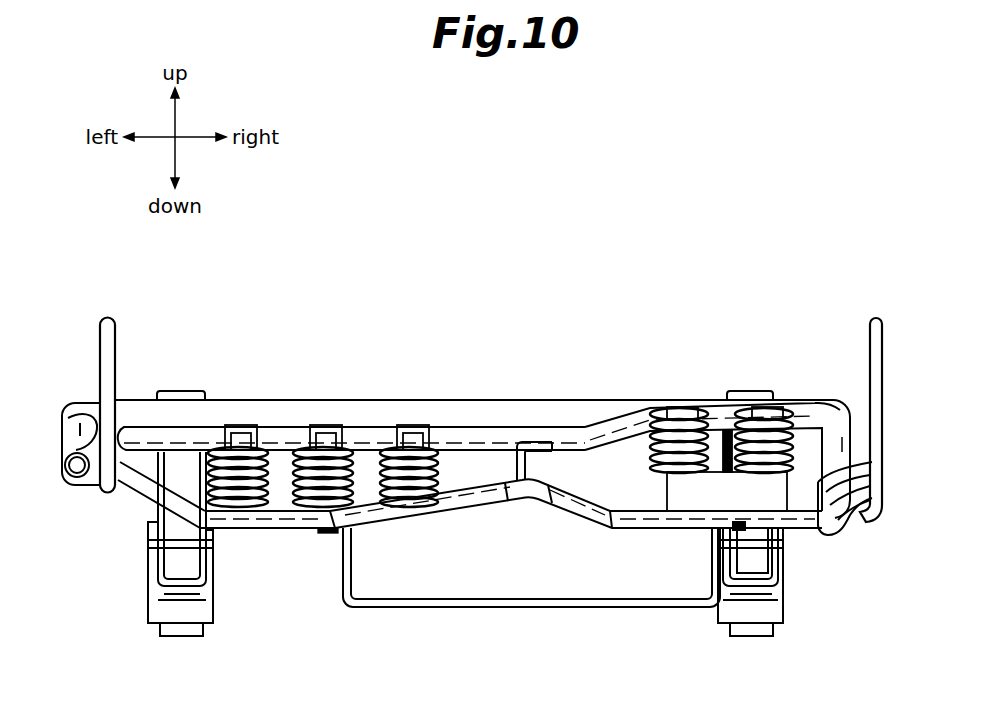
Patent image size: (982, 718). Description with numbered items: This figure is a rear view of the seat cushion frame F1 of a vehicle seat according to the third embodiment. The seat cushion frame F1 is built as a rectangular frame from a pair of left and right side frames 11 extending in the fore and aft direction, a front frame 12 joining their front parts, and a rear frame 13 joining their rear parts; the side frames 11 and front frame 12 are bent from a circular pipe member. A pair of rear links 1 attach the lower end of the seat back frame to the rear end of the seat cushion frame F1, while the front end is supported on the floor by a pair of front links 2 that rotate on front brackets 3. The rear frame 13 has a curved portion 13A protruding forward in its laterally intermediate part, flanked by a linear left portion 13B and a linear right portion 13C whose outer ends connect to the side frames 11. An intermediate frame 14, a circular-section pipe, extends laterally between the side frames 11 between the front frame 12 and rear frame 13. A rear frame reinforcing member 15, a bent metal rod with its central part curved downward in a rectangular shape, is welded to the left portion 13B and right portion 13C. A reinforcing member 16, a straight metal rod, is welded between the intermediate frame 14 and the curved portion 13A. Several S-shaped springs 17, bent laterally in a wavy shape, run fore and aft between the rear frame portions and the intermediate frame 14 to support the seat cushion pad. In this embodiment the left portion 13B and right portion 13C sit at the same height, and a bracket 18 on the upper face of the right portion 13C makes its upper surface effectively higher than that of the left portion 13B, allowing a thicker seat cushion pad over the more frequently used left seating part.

The seat cushion frame F1 is at (566, 262).
The rear link 1 is at (100, 336).
The front link 2 is at (155, 586).
The front bracket 3 is at (180, 637).
The side frame 11 is at (62, 437).
The front frame 12 is at (378, 410).
The rear frame 13 is at (511, 575).
The curved portion 13A is at (487, 500).
The left portion 13B is at (285, 513).
The right portion 13C is at (658, 512).
The intermediate frame 14 is at (565, 432).
The rear frame reinforcing member 15 is at (418, 607).
The reinforcing member 16 is at (508, 455).
The S-shaped spring 17 is at (270, 478).
The bracket 18 is at (718, 478).